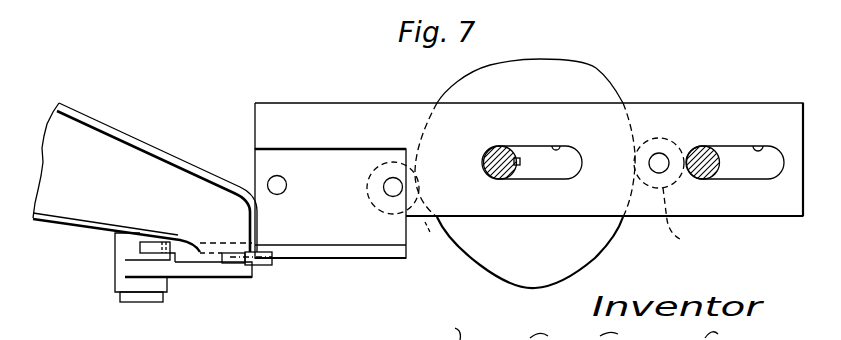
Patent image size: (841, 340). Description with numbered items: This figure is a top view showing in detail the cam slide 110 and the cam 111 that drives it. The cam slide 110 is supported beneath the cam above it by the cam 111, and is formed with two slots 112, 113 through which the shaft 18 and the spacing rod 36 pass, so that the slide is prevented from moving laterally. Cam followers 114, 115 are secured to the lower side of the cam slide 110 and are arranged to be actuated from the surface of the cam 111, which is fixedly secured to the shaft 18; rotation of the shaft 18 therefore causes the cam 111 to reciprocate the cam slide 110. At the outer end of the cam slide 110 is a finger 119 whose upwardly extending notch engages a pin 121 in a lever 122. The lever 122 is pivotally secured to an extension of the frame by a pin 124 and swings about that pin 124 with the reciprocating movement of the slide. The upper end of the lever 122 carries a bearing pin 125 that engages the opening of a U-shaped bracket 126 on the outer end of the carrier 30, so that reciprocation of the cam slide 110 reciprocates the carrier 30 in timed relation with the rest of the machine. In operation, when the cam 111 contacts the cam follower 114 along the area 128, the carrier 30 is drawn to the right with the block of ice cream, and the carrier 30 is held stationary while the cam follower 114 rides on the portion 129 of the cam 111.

The carrier 30 is at (125, 153).
The cam slide 110 is at (665, 113).
The cam 111 is at (530, 173).
The slot 112 is at (562, 146).
The slot 113 is at (765, 147).
The cam follower 114 is at (689, 217).
The cam follower 115 is at (415, 203).
The finger 119 is at (323, 252).
The pin 121 is at (180, 262).
The lever 122 is at (197, 270).
The pin 124 is at (142, 302).
The bearing pin 125 is at (233, 261).
The U-shaped bracket 126 is at (263, 267).
The area 128 is at (472, 255).
The portion 129 is at (602, 250).
The shaft 18 is at (497, 148).
The spacing rod 36 is at (700, 150).